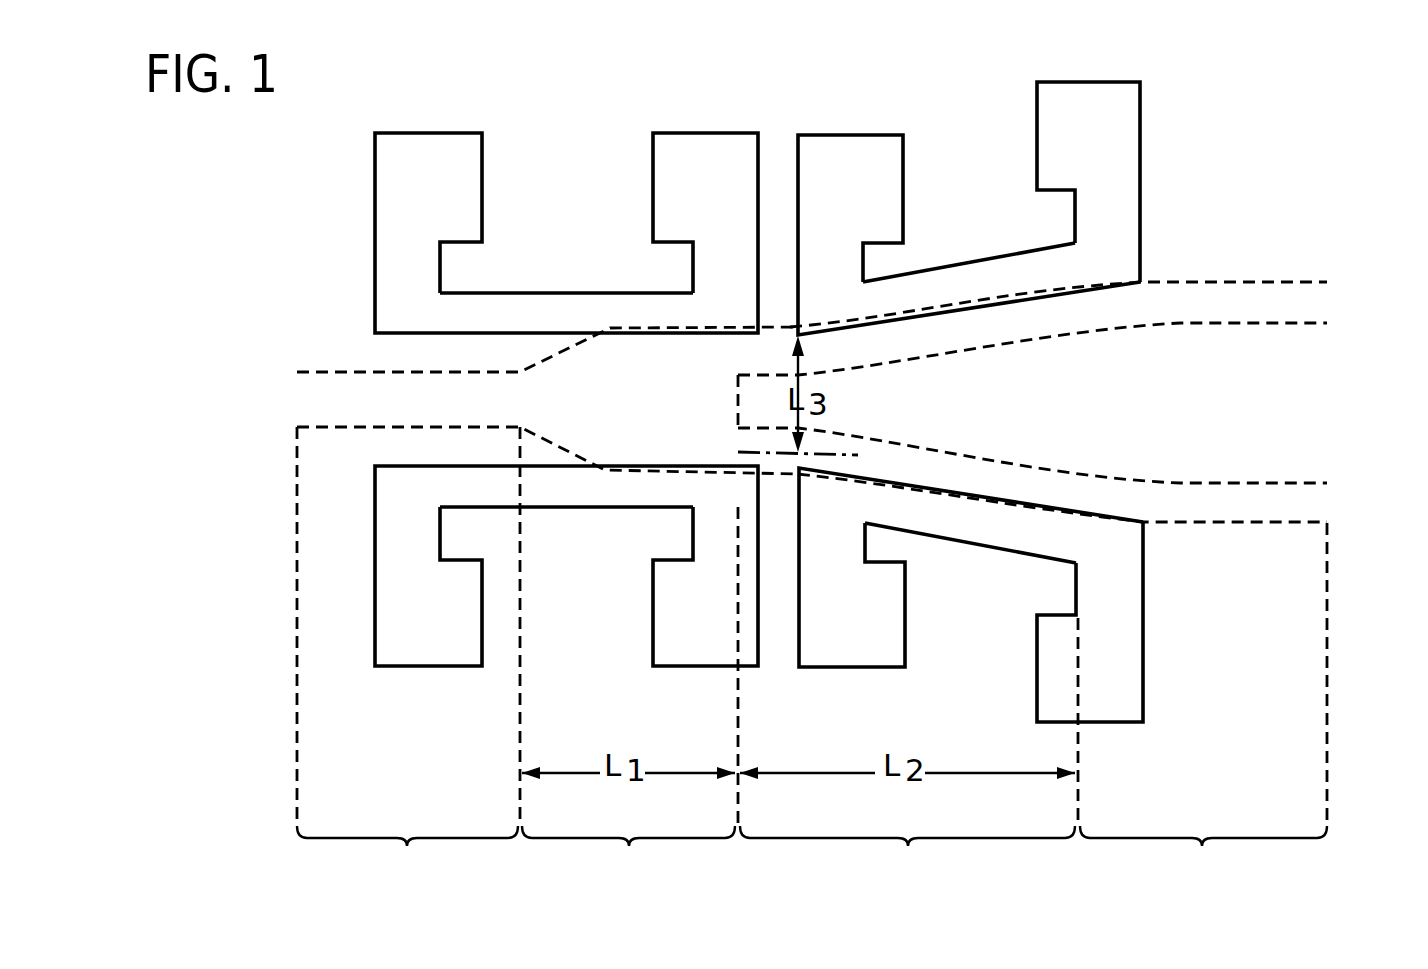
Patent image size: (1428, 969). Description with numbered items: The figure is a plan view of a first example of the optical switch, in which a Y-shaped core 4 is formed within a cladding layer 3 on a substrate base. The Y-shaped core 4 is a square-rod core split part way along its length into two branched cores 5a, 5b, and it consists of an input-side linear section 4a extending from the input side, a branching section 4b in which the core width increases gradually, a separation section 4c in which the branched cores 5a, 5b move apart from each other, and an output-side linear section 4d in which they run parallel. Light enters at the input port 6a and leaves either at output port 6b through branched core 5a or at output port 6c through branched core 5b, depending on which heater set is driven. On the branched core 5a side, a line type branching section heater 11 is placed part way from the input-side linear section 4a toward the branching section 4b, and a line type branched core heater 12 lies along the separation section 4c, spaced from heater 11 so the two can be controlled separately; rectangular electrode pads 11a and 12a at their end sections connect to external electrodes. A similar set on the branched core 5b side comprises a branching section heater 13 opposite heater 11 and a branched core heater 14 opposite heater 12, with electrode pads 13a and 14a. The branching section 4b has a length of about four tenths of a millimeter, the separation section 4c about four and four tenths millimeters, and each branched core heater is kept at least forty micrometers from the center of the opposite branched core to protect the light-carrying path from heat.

The cladding layer 3 is at (1290, 160).
The Y-shaped core 4 is at (812, 540).
The input-side linear section 4a is at (407, 655).
The branching section 4b is at (627, 655).
The separation section 4c is at (906, 696).
The output-side linear section 4d is at (1202, 704).
The branched core 5a is at (1293, 295).
The branched core 5b is at (1282, 510).
The input port 6a is at (325, 402).
The output port 6b is at (1307, 305).
The output port 6c is at (1305, 508).
The branching section heater 11 is at (566, 201).
The electrode pads 11a is at (418, 150).
The branched core heater 12 is at (1015, 200).
The electrode pads 12a is at (875, 175).
The branching section heater 13 is at (566, 599).
The electrode pads 13a is at (668, 622).
The branched core heater 14 is at (1011, 601).
The electrode pads 14a is at (875, 628).